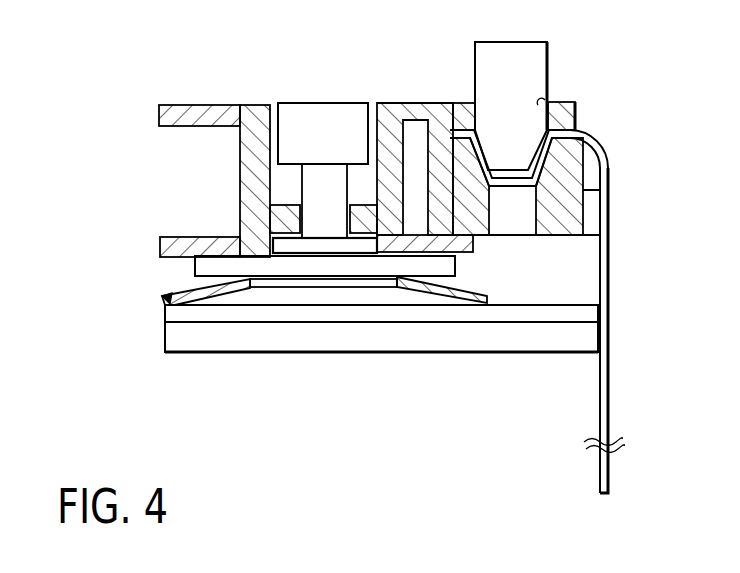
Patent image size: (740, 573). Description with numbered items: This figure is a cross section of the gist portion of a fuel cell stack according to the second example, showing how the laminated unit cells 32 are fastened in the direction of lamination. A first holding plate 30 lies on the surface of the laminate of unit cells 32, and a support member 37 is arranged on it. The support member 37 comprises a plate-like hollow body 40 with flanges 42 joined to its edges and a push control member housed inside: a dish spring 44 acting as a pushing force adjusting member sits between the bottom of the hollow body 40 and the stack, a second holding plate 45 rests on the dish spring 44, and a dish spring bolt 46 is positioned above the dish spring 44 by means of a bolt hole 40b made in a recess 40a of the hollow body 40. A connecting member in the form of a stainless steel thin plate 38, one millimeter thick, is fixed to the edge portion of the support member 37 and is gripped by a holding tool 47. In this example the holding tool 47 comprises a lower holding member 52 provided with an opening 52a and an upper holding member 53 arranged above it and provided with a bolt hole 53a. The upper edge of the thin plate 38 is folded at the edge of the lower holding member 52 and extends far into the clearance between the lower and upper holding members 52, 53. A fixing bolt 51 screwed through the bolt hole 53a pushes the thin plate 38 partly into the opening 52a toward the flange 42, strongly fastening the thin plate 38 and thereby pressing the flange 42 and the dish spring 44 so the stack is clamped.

The first holding plate 30 is at (190, 312).
The unit cell 32 is at (233, 342).
The support member 37 is at (266, 94).
The connecting member (thin plate) 38 is at (600, 462).
The hollow body 40 is at (305, 235).
The recess 40a is at (272, 173).
The bolt hole 40b is at (305, 208).
The flange 42 is at (471, 252).
The dish spring 44 is at (442, 292).
The second holding plate 45 is at (343, 266).
The dish spring bolt 46 is at (313, 108).
The holding tool 47 is at (552, 268).
The fixing bolt 51 is at (508, 50).
The lower holding member 52 is at (589, 168).
The opening 52a is at (534, 222).
The upper holding member 53 is at (467, 107).
The bolt hole 53a is at (540, 100).